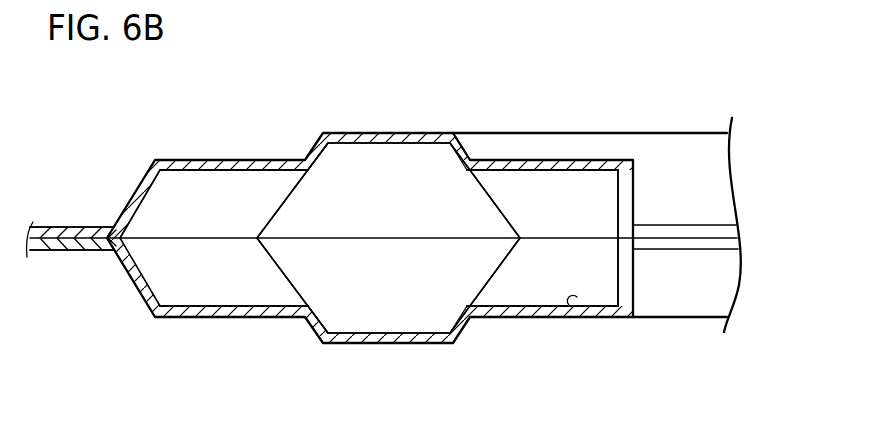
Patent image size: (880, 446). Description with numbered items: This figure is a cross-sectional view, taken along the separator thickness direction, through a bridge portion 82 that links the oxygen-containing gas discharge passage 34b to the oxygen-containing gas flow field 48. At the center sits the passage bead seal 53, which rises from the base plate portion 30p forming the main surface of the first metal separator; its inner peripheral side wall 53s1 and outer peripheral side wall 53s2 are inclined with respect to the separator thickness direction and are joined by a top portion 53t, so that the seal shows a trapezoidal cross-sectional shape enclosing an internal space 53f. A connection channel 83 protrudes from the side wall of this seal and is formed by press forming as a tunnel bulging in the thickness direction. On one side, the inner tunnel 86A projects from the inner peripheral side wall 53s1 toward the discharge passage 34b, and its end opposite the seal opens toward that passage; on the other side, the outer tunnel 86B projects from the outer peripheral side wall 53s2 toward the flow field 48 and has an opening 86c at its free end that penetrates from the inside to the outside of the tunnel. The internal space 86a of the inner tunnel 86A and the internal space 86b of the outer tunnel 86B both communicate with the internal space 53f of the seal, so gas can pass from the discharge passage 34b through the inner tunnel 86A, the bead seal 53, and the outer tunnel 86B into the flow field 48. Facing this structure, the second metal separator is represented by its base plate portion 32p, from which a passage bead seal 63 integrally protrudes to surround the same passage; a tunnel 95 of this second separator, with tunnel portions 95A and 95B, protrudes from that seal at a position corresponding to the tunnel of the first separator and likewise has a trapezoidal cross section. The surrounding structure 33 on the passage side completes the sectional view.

The bridge portion 82 is at (163, 132).
The outer tunnel 86B is at (228, 159).
The inner tunnel 86A is at (549, 159).
The internal space of the inner tunnel 86a is at (575, 219).
The internal space of the outer tunnel 86b is at (206, 219).
The opening 86c is at (133, 200).
The passage bead seal 53 is at (390, 131).
The internal space of the passage bead seal 53f is at (403, 206).
The top portion 53t is at (347, 133).
The inner peripheral side wall 53s1 is at (468, 150).
The outer peripheral side wall 53s2 is at (308, 150).
The passage bead seal 63 is at (372, 343).
The tunnel 95 is at (148, 331).
The first lower wall 95A is at (522, 318).
The second lower wall 95B is at (224, 317).
The connection channel 83 is at (618, 172).
The housing 33 is at (646, 96).
The oxygen-containing gas discharge passage 34b is at (690, 203).
The oxygen-containing gas flow field 48 is at (54, 163).
The base plate portion 30p is at (71, 226).
The base plate portion 32p is at (70, 251).